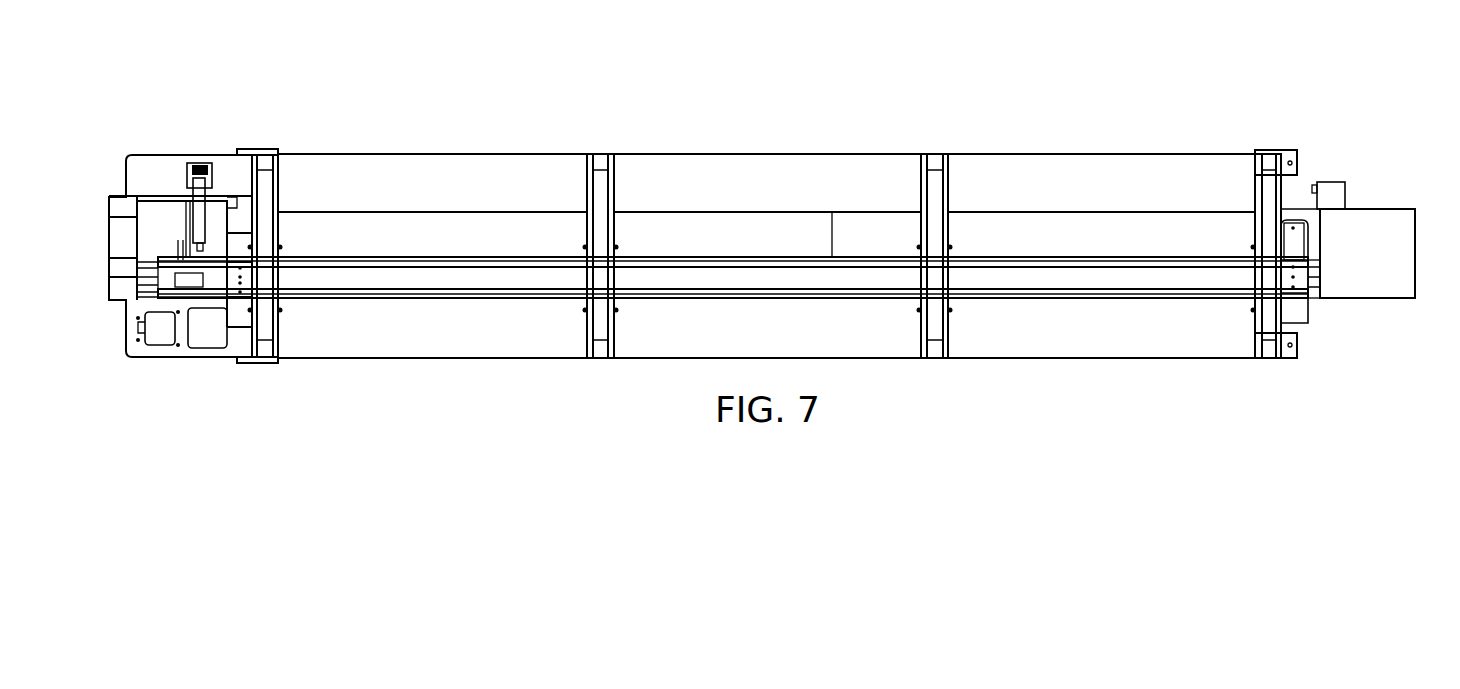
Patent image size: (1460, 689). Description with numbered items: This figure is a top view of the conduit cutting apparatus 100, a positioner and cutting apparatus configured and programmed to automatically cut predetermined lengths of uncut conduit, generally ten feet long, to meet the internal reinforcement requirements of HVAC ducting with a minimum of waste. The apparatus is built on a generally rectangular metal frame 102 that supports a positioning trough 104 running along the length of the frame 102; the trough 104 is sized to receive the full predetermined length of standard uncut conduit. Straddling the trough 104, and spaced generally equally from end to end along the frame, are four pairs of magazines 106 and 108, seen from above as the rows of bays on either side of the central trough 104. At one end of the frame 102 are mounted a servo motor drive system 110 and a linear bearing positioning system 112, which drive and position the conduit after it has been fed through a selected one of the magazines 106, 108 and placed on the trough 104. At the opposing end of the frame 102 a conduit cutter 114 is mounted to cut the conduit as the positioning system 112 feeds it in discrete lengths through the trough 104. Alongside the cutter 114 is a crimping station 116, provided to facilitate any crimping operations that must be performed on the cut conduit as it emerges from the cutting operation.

The conduit cutting apparatus 100 is at (831, 100).
The frame 102 is at (452, 180).
The positioning trough 104 is at (746, 278).
The magazine 106 is at (278, 320).
The magazine 108 is at (278, 182).
The servo motor drive system 110 is at (1330, 190).
The linear bearing positioning system 112 is at (1385, 235).
The conduit cutter 114 is at (200, 205).
The crimping station 116 is at (181, 365).